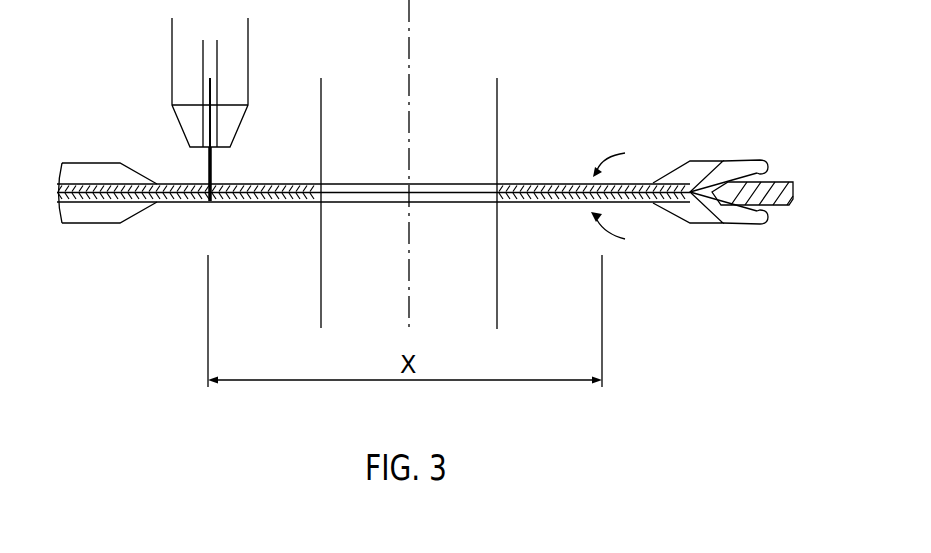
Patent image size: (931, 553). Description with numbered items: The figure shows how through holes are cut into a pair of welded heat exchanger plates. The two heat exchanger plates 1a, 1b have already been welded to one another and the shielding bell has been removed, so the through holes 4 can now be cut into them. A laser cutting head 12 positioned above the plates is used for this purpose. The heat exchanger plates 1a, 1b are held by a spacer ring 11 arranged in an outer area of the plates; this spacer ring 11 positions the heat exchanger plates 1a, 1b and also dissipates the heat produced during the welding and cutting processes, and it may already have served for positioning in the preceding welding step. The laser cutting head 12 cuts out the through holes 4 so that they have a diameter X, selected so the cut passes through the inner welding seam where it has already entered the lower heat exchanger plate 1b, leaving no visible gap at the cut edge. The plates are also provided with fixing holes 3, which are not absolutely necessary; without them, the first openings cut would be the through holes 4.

The fixing holes 3 is at (333, 189).
The through holes 4 is at (616, 193).
The laser cutting head 12 is at (243, 50).
The heat exchanger plate 1a is at (757, 161).
The heat exchanger plate 1b is at (757, 225).
The spacer ring 11 is at (784, 205).